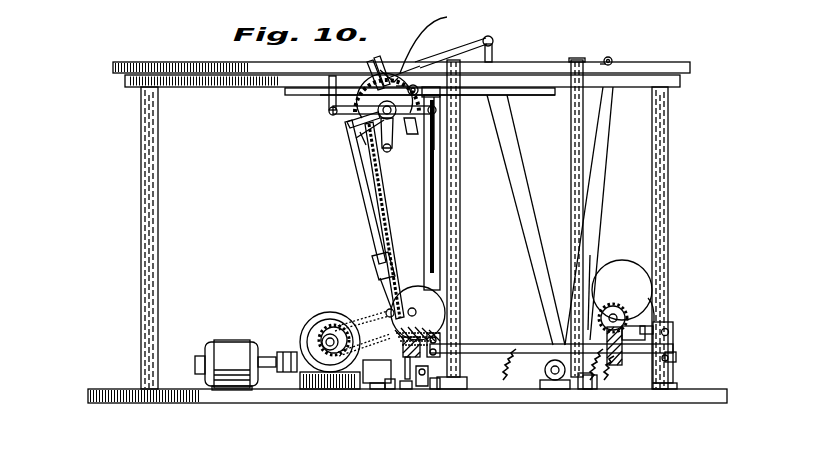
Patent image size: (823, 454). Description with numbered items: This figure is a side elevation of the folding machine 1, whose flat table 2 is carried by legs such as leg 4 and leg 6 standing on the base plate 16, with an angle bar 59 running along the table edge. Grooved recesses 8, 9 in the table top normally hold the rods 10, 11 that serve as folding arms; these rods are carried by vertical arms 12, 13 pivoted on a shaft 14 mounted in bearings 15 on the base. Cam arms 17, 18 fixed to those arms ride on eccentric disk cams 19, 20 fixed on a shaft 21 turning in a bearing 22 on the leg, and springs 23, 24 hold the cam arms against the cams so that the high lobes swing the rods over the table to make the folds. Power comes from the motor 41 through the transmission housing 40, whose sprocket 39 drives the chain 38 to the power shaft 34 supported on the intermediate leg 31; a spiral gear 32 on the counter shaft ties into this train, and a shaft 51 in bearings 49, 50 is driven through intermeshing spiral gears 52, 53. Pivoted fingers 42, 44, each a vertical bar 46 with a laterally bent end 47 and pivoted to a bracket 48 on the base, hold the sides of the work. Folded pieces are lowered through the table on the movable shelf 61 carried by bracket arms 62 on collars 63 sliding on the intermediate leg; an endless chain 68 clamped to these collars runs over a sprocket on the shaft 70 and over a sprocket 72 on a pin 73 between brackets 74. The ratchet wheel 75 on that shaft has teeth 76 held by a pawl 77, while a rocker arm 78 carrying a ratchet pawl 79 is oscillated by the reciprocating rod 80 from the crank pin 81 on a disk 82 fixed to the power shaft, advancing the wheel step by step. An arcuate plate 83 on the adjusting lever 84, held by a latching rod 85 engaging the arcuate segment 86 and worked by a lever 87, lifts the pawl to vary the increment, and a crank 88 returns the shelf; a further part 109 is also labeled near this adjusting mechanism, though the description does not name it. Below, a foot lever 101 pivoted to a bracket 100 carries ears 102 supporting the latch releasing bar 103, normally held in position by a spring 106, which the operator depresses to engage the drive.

The folding machine 1 is at (650, 62).
The table 2 is at (662, 75).
The leg 4 is at (668, 172).
The leg 6 is at (141, 238).
The grooved recess 8 is at (428, 39).
The grooved recess 9 is at (604, 60).
The rod 10 is at (494, 41).
The rod 11 is at (611, 58).
The arm 12 is at (507, 130).
The arm 13 is at (598, 157).
The shaft 14 is at (545, 369).
The bearing 15 is at (553, 380).
The base plate 16 is at (112, 389).
The cam arm 17 is at (585, 389).
The cam arm 18 is at (590, 262).
The cam 19 is at (630, 278).
The cam 20 is at (670, 332).
The shaft 21 is at (616, 312).
The bearing 22 is at (660, 300).
The spring 23 is at (510, 380).
The spring 24 is at (605, 381).
The intermediate leg 31 is at (424, 200).
The spiral gear 32 is at (392, 346).
The power shaft 34 is at (420, 287).
The chain 38 is at (366, 318).
The sprocket 39 is at (331, 325).
The transmission gearing housing 40 is at (306, 328).
The motor 41 is at (238, 345).
The pivoted finger 42 is at (460, 218).
The pivoted finger 44 is at (583, 60).
The bar 46 is at (583, 217).
The laterally bent end 47 is at (571, 60).
The bracket 48 is at (590, 389).
The bearing 49 is at (676, 356).
The bearing 50 is at (455, 389).
The shaft 51 is at (515, 348).
The spiral gear 52 is at (630, 340).
The spiral gear 53 is at (618, 365).
The angle bar 59 is at (200, 87).
The movable shelf 61 is at (508, 90).
The bracket arm 62 is at (450, 105).
The collar 63 is at (438, 135).
The endless chain 68 is at (386, 233).
The shaft 70 is at (352, 126).
The sprocket 72 is at (440, 343).
The pin 73 is at (434, 389).
The bracket 74 is at (422, 386).
The ratchet wheel 75 is at (358, 136).
The teeth 76 is at (362, 142).
The pawl 77 is at (410, 134).
The rocker arm 78 is at (348, 112).
The ratchet pawl 79 is at (410, 68).
The reciprocating rod 80 is at (362, 235).
The crank pin 81 is at (380, 300).
The disk 82 is at (430, 310).
The arcuate plate 83 is at (370, 62).
The adjusting lever 84 is at (377, 58).
The latching rod 85 is at (410, 85).
The arcuate segment 86 is at (329, 100).
The lever 87 is at (385, 70).
The crank 88 is at (389, 152).
The bracket 100 is at (390, 389).
The foot lever 101 is at (378, 389).
The ears 102 is at (398, 372).
The latch releasing bar 103 is at (405, 352).
The spring 106 is at (405, 389).
The arm 109 is at (486, 38).